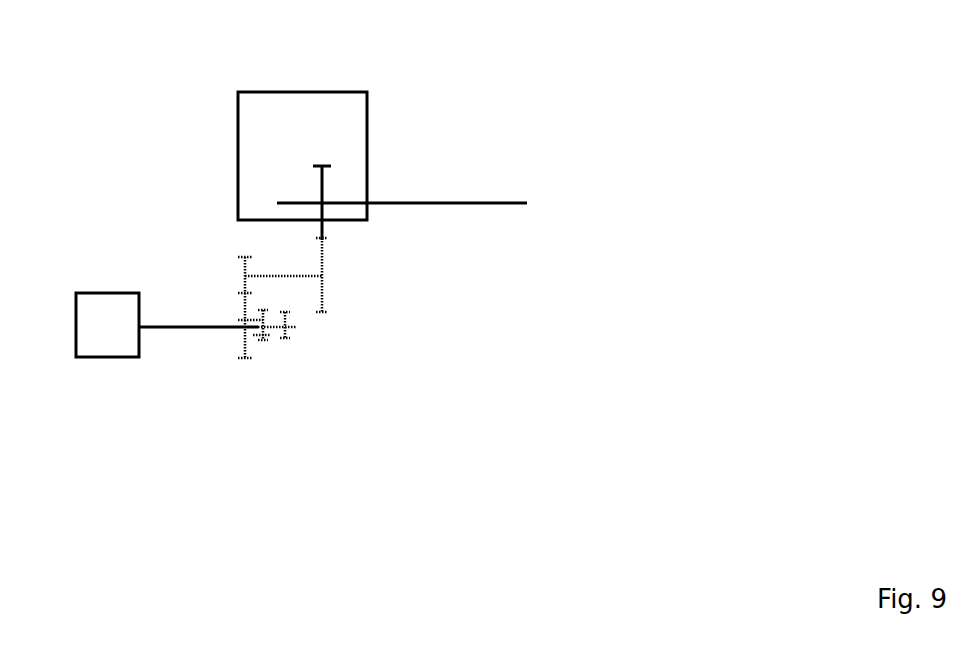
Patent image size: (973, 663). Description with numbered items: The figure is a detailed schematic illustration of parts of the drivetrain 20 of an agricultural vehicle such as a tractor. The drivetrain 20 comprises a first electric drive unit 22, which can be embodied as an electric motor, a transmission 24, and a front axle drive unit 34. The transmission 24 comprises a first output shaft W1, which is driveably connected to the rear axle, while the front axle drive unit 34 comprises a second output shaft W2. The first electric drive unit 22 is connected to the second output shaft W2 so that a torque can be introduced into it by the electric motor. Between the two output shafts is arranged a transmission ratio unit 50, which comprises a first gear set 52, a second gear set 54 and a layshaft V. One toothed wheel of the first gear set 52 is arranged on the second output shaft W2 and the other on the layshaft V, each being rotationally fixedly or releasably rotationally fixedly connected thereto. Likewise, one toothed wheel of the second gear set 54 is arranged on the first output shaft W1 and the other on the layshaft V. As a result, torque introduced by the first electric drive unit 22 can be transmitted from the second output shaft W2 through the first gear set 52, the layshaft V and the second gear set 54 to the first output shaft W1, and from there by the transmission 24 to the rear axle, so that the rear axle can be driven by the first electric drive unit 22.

The drivetrain 20 is at (150, 101).
The first electric drive unit 22 is at (102, 293).
The transmission 24 is at (285, 92).
The front axle drive unit 34 is at (257, 396).
The transmission ratio unit 50 is at (358, 350).
The first gear set 52 is at (247, 282).
The second gear set 54 is at (323, 245).
The layshaft V is at (298, 278).
The first output shaft W1 is at (403, 203).
The second output shaft W2 is at (168, 327).